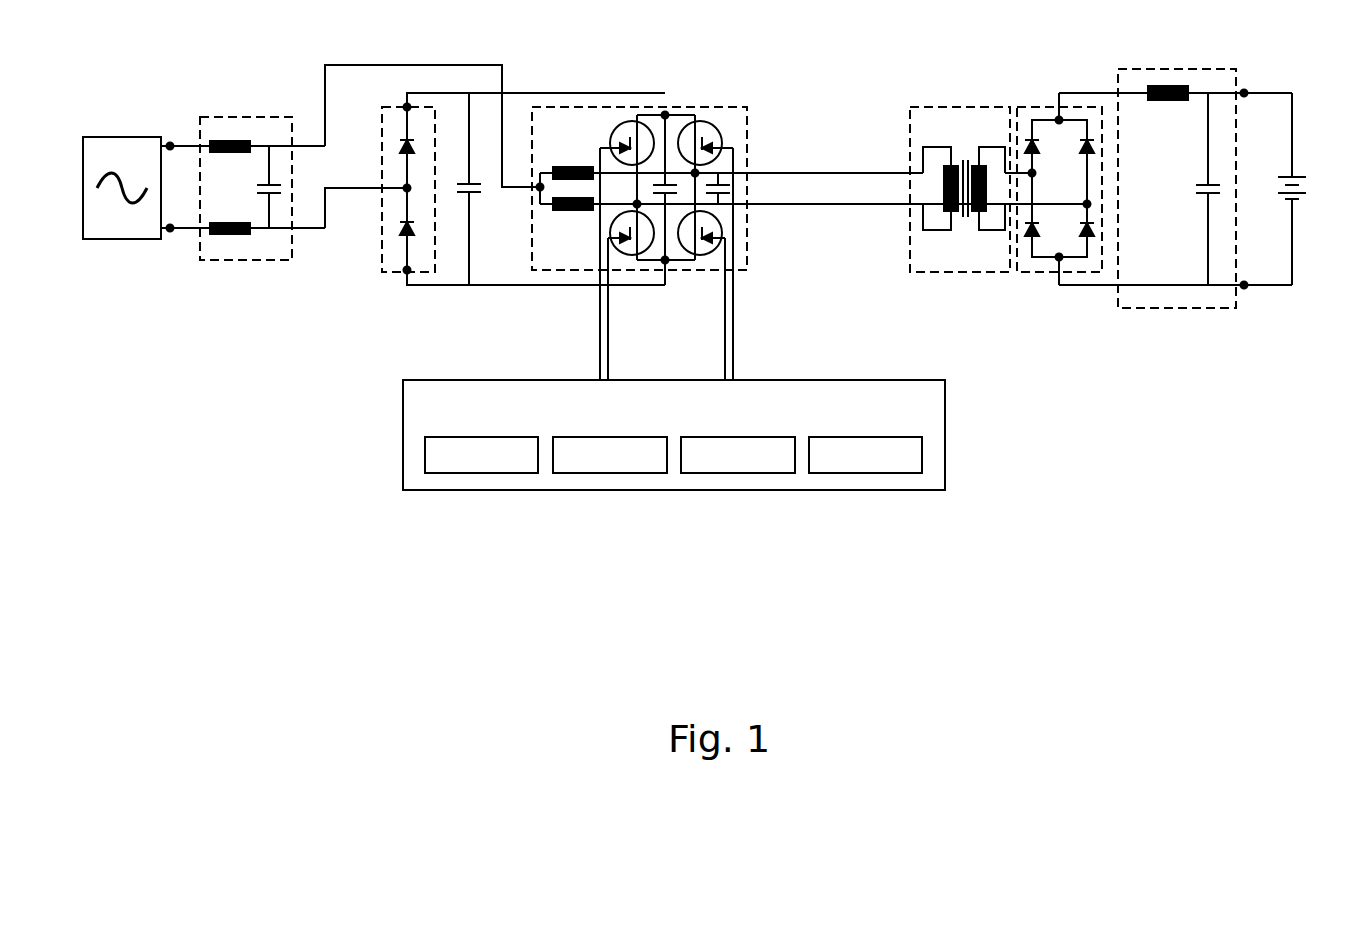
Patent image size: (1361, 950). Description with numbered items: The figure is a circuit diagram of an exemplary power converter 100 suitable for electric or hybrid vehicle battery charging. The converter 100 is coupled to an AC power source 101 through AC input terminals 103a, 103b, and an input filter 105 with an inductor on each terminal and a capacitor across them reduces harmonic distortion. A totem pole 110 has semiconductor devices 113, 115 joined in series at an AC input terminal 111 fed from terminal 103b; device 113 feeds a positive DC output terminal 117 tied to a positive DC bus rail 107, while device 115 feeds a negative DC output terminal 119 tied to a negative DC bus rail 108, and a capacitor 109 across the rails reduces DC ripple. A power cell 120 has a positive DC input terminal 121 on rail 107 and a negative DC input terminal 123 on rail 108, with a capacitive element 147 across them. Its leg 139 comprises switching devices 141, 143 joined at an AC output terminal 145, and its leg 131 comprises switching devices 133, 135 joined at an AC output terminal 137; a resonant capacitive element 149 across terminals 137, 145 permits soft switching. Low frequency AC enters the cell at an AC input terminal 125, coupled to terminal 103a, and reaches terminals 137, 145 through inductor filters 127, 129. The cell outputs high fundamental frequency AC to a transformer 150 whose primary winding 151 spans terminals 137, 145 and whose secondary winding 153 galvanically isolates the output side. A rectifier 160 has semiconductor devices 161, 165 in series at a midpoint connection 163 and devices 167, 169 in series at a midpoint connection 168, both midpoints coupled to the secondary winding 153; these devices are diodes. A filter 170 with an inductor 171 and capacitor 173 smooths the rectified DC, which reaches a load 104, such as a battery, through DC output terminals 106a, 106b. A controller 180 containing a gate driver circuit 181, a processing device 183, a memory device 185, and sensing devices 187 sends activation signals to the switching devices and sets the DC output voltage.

The power converter 100 is at (306, 359).
The AC power source 101 is at (106, 137).
The AC input terminal 103a is at (171, 143).
The AC input terminal 103b is at (171, 232).
The load 104 is at (1293, 93).
The input filter 105 is at (248, 117).
The DC output terminal 106a is at (1244, 91).
The DC output terminal 106b is at (1244, 288).
The positive DC bus rail 107 is at (530, 93).
The negative DC bus rail 108 is at (528, 285).
The capacitor 109 is at (470, 242).
The totem pole 110 is at (382, 246).
The AC input terminal 111 is at (404, 188).
The semiconductor device 113 is at (400, 147).
The semiconductor device 115 is at (400, 229).
The positive DC output terminal 117 is at (406, 106).
The negative DC output terminal 119 is at (406, 273).
The power cell 120 is at (731, 107).
The positive DC input terminal 121 is at (667, 114).
The negative DC input terminal 123 is at (667, 262).
The AC input terminal 125 is at (538, 190).
The filter 127 is at (567, 166).
The filter 129 is at (567, 212).
The leg 131 is at (720, 121).
The switching device 133 is at (724, 146).
The switching device 135 is at (724, 238).
The AC output terminal 137 is at (698, 172).
The leg 139 is at (644, 110).
The switching device 141 is at (622, 124).
The switching device 143 is at (620, 255).
The AC output terminal 145 is at (636, 204).
The capacitive element 147 is at (710, 205).
The resonant capacitive element 149 is at (726, 192).
The transformer 150 is at (958, 107).
The primary winding 151 is at (934, 230).
The secondary winding 153 is at (994, 230).
The rectifier 160 is at (1040, 107).
The semiconductor device 161 is at (1035, 145).
The midpoint connection 163 is at (1035, 176).
The semiconductor device 165 is at (1035, 229).
The semiconductor device 167 is at (1092, 144).
The midpoint connection 168 is at (1090, 204).
The semiconductor device 169 is at (1092, 230).
The filter 170 is at (1125, 69).
The inductor 171 is at (1168, 86).
The capacitor 173 is at (1200, 185).
The controller 180 is at (477, 380).
The gate driver circuit 181 is at (477, 473).
The processing device 183 is at (606, 473).
The memory device 185 is at (736, 473).
The sensing devices 187 is at (866, 473).